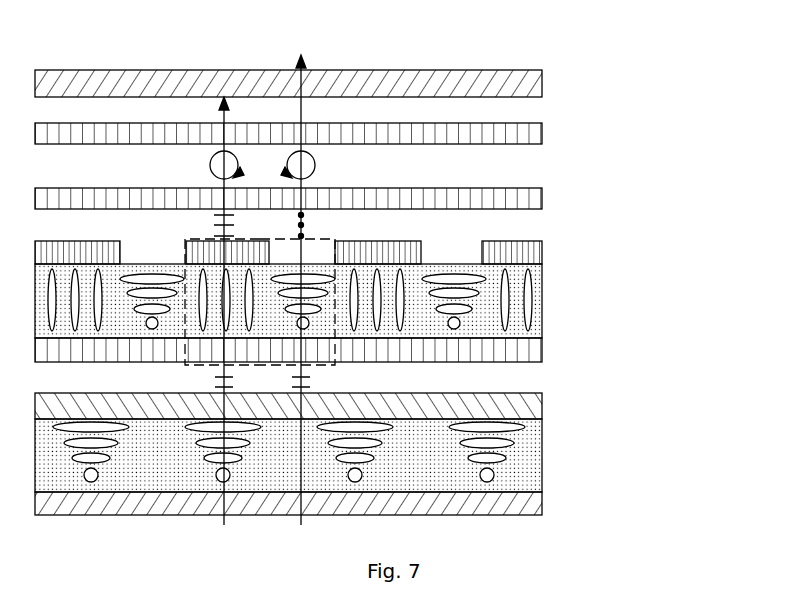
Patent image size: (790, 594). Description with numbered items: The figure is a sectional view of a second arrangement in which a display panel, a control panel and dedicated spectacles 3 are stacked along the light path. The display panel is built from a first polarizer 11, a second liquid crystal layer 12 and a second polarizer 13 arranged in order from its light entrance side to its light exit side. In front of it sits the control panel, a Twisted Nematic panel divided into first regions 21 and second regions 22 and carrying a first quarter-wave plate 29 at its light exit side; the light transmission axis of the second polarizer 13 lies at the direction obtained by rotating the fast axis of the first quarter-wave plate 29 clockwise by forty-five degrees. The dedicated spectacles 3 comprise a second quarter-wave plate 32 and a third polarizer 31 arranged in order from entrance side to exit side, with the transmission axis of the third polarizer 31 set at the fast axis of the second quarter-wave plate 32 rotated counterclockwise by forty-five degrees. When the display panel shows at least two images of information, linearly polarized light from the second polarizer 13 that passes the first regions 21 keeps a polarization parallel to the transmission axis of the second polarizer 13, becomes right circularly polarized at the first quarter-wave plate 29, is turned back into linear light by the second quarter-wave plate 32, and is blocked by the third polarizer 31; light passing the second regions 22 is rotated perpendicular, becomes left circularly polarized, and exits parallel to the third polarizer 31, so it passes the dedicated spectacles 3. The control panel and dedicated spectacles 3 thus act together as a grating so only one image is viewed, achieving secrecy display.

The dedicated spectacles 3 is at (368, 95).
The third polarizer 31 is at (528, 78).
The second quarter-wave plate 32 is at (525, 136).
The first quarter-wave plate 29 is at (525, 200).
The first regions 21 is at (239, 239).
The second regions 22 is at (318, 239).
The second polarizer 13 is at (528, 405).
The second liquid crystal layer 12 is at (528, 455).
The first polarizer 11 is at (528, 498).